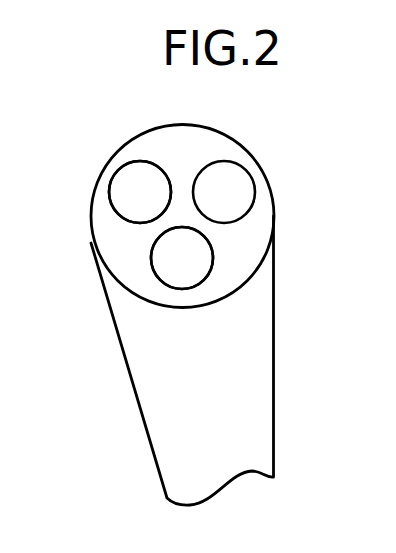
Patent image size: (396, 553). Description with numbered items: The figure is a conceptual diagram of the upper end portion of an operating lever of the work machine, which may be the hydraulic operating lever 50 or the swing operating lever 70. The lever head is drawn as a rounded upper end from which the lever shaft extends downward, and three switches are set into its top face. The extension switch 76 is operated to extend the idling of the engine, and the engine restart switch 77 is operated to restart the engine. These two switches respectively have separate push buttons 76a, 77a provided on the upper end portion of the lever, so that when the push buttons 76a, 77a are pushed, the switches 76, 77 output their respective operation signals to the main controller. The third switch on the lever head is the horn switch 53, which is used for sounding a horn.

The hydraulic operating lever 50 is at (228, 315).
The swing operating lever 70 is at (240, 355).
The horn switch 53 is at (232, 188).
The extension switch 76 is at (111, 181).
The push button 76a is at (131, 197).
The engine restart switch 77 is at (153, 272).
The push button 77a is at (180, 270).